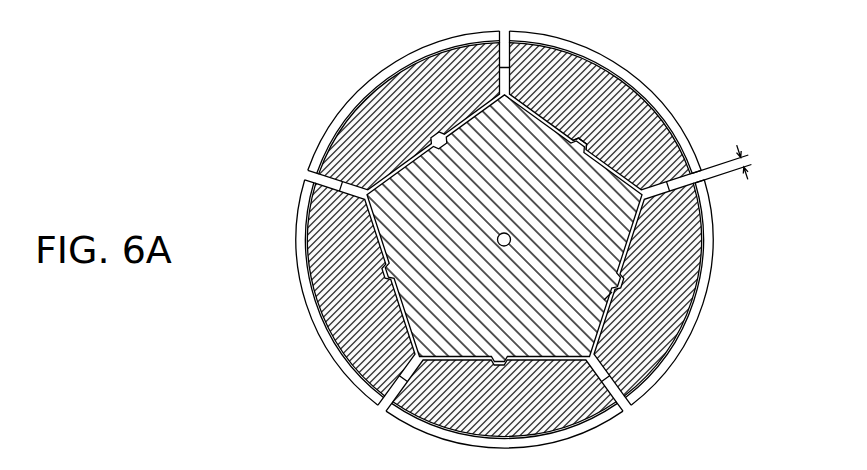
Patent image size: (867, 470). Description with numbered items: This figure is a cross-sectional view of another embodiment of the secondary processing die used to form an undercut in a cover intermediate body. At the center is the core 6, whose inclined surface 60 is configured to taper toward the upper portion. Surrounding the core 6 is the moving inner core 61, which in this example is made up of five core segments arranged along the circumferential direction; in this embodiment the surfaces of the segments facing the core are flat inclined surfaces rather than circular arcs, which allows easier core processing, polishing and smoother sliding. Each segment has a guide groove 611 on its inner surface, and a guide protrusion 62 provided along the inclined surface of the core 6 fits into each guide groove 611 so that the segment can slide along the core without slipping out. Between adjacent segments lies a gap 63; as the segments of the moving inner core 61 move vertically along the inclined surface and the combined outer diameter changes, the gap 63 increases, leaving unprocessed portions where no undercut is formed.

The core 6 is at (440, 314).
The inclined surface 60 is at (637, 245).
The moving inner core 61 is at (358, 141).
The guide groove 611 is at (585, 132).
The guide protrusion 62 is at (627, 288).
The gap 63 is at (763, 161).